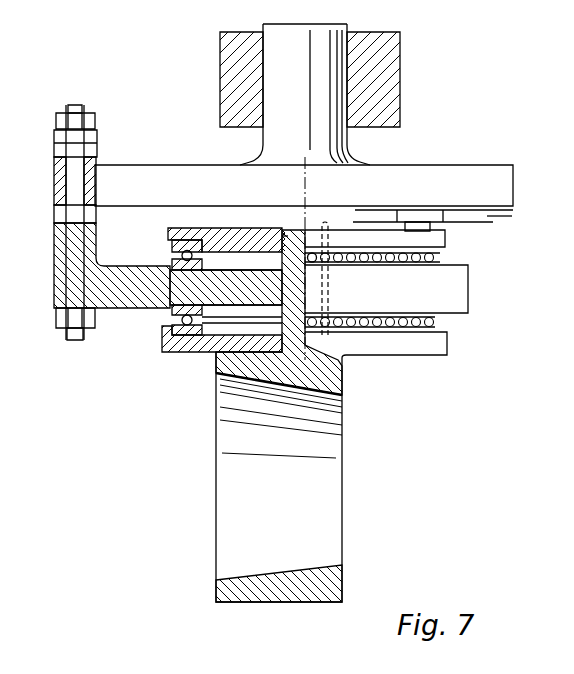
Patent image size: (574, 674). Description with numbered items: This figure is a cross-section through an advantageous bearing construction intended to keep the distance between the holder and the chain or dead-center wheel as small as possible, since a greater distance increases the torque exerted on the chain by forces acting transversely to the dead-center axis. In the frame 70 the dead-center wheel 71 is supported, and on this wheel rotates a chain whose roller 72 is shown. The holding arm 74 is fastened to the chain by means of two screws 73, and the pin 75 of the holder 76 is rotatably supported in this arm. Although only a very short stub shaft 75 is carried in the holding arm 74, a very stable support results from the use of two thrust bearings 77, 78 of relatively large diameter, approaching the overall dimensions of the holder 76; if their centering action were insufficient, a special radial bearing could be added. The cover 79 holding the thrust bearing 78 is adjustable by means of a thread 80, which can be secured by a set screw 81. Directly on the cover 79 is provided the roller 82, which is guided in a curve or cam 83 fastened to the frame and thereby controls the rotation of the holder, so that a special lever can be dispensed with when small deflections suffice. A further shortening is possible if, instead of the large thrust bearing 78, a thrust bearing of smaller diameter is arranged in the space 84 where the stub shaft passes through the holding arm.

The frame 70 is at (372, 65).
The dead-center wheel 71 is at (500, 186).
The roller 72 is at (56, 182).
The screws 73 is at (75, 258).
The holding arm 74 is at (110, 300).
The pin 75 is at (292, 322).
The holder 76 is at (252, 495).
The thrust bearing 77 is at (166, 328).
The thrust bearing 78 is at (176, 268).
The cover 79 is at (217, 234).
The thread 80 is at (283, 236).
The set screw 81 is at (324, 233).
The roller 82 is at (420, 220).
The curve (cam) 83 is at (512, 216).
The space 84 is at (217, 375).